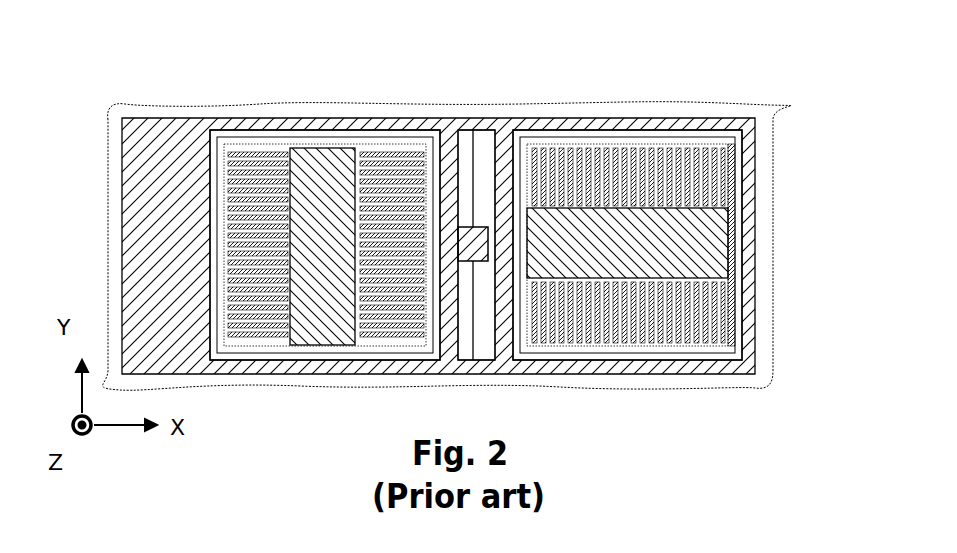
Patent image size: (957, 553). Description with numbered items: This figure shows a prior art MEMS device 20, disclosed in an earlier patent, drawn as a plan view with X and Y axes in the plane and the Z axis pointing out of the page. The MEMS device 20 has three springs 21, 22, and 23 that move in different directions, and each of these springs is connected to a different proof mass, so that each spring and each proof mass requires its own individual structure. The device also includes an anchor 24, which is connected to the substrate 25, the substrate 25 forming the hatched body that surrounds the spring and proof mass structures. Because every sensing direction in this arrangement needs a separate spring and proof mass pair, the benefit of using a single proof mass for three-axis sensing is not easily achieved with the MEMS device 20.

The MEMS device 20 is at (65, 30).
The spring 21 is at (475, 172).
The spring 22 is at (315, 137).
The spring 23 is at (740, 215).
The anchor 24 is at (490, 245).
The substrate 25 is at (115, 232).